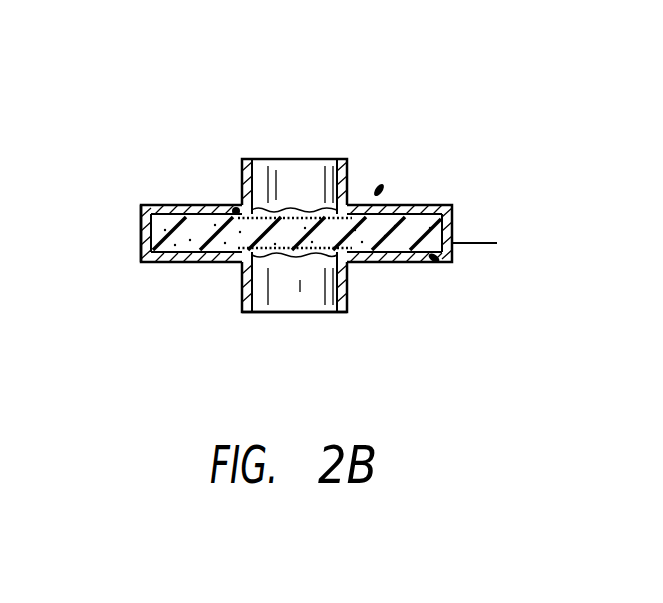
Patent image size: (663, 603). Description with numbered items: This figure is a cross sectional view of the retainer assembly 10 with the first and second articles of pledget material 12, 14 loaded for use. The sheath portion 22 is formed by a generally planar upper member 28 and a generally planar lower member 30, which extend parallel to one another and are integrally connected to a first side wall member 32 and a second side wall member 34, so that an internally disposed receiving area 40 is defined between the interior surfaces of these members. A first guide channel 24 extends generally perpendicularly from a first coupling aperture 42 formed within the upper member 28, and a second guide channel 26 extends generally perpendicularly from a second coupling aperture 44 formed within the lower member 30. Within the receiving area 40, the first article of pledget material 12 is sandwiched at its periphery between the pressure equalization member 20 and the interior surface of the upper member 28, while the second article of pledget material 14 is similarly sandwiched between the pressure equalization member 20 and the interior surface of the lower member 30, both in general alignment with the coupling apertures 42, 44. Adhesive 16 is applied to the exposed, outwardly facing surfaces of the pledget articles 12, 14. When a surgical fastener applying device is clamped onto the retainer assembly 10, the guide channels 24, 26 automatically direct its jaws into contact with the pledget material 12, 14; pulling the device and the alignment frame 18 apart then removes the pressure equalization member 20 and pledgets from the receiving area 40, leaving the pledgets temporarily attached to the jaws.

The retainer assembly 10 is at (396, 92).
The first article of pledget material 12 is at (233, 208).
The second article of pledget material 14 is at (365, 262).
The adhesive 16 is at (285, 208).
The alignment frame 18 is at (372, 208).
The pressure equalization member 20 is at (440, 265).
The sheath portion 22 is at (138, 204).
The first guide channel 24 is at (268, 160).
The second guide channel 26 is at (323, 313).
The upper member 28 is at (410, 207).
The lower member 30 is at (157, 263).
The first side wall member 32 is at (141, 238).
The second side wall member 34 is at (491, 244).
The receiving area 40 is at (184, 272).
The first coupling aperture 42 is at (325, 203).
The second coupling aperture 44 is at (335, 257).